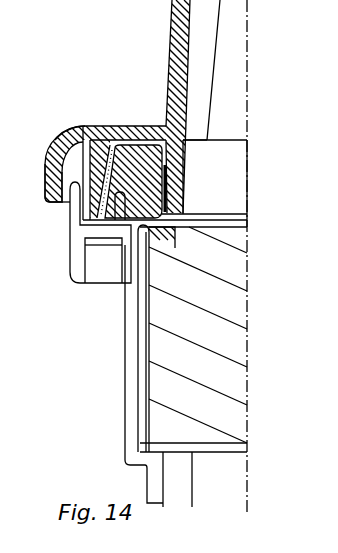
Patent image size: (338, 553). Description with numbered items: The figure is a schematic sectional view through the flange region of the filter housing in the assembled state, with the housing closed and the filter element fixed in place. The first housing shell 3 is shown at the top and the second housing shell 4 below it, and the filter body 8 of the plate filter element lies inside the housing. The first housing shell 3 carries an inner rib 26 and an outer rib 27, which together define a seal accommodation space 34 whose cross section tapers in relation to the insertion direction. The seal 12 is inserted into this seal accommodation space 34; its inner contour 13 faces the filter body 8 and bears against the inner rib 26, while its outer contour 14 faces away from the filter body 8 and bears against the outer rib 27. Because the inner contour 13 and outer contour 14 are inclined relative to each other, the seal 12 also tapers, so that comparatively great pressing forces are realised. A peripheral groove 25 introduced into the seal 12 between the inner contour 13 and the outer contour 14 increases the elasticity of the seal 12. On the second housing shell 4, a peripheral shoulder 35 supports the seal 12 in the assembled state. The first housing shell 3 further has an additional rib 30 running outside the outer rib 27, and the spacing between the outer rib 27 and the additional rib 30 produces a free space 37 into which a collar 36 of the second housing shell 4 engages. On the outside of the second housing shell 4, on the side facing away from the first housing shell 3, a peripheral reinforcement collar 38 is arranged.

The first housing shell 3 is at (170, 38).
The second housing shell 4 is at (123, 387).
The filter body 8 is at (212, 339).
The seal 12 is at (186, 182).
The inner contour 13 is at (190, 157).
The outer contour 14 is at (80, 233).
The peripheral groove 25 is at (180, 208).
The inner rib 26 is at (213, 140).
The outer rib 27 is at (85, 126).
The additional rib 30 is at (43, 185).
The seal accommodation space 34 is at (143, 127).
The peripheral shoulder 35 is at (110, 127).
The collar 36 is at (80, 205).
The free space 37 is at (53, 146).
The reinforcement collar 38 is at (72, 273).